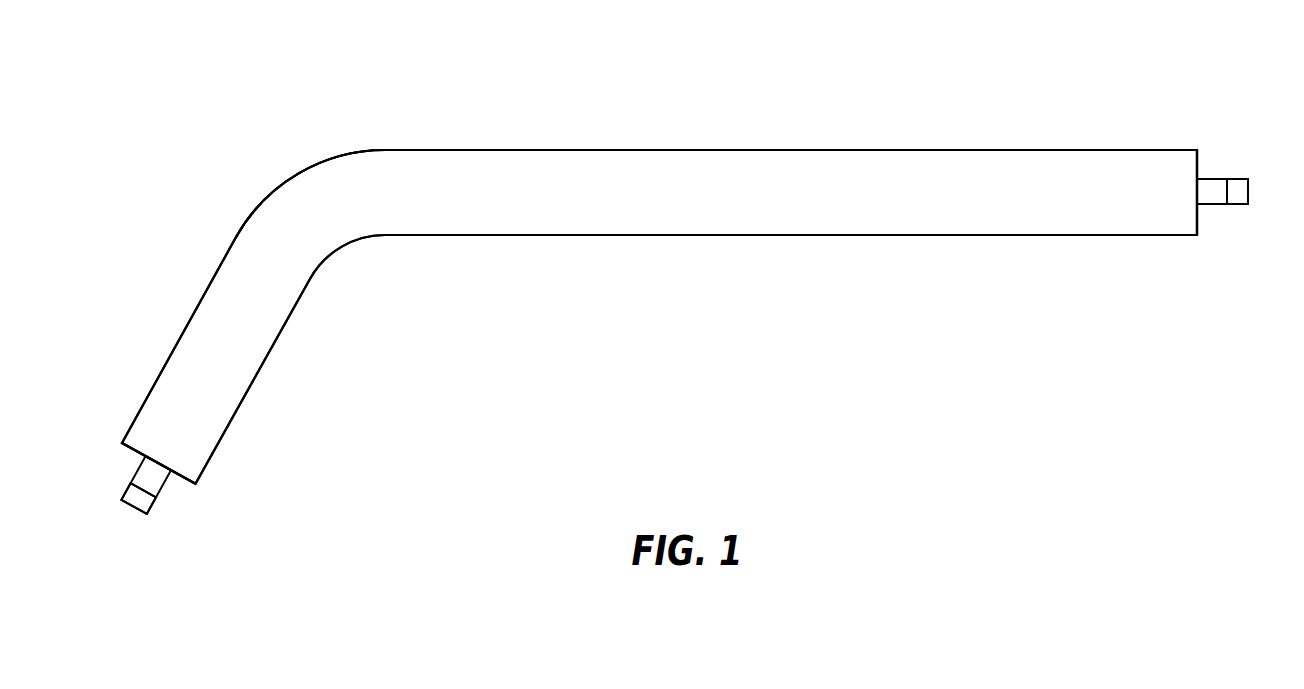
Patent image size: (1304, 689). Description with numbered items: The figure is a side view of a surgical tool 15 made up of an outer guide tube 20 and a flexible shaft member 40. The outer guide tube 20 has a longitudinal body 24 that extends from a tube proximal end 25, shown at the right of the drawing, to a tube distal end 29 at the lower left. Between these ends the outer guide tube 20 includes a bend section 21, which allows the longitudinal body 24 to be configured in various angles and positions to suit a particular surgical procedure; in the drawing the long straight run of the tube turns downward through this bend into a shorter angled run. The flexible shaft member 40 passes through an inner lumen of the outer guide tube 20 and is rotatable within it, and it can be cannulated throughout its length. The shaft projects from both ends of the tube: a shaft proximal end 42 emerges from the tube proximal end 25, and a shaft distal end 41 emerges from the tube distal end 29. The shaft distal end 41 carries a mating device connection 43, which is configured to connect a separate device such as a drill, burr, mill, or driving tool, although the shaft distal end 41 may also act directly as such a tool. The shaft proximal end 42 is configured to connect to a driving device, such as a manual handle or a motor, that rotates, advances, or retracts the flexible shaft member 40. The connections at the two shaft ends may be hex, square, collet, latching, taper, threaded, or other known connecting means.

The surgical tool 15 is at (272, 90).
The outer guide tube 20 is at (737, 149).
The bend section 21 is at (300, 176).
The longitudinal body 24 is at (795, 236).
The tube proximal end 25 is at (1179, 148).
The tube distal end 29 is at (127, 435).
The flexible shaft member 40 is at (165, 487).
The shaft distal end 41 is at (140, 505).
The shaft proximal end 42 is at (1237, 182).
The mating device connection 43 is at (130, 496).